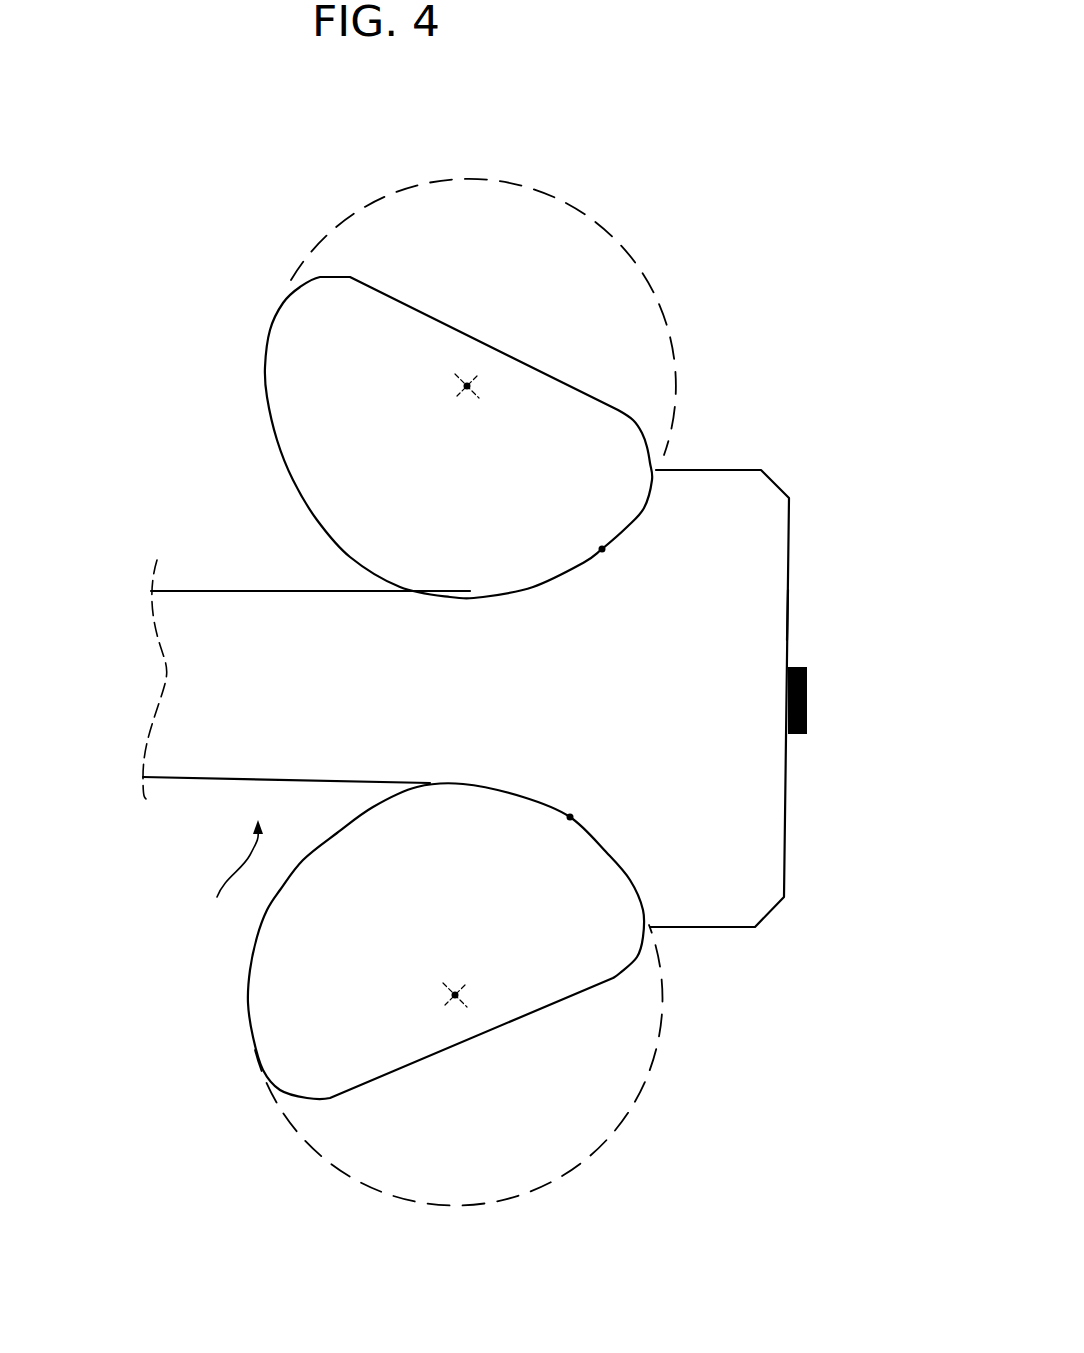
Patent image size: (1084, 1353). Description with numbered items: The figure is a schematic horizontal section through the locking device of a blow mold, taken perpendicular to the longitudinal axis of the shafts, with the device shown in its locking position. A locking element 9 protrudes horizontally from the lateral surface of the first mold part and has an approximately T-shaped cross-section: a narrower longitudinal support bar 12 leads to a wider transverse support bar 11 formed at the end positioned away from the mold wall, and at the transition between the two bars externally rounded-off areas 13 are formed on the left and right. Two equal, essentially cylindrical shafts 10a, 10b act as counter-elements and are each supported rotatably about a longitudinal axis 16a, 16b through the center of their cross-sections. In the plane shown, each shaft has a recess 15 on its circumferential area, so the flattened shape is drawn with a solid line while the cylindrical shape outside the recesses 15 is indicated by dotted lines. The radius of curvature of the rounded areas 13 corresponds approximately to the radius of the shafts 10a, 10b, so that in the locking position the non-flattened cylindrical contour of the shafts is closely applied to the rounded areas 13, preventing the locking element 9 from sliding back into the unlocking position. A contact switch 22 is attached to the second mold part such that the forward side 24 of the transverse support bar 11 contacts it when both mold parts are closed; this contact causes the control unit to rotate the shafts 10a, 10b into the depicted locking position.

The locking element 9 is at (230, 883).
The shaft 10a is at (573, 943).
The shaft 10b is at (388, 427).
The transverse support bar 11 is at (717, 519).
The longitudinal support bar 12 is at (242, 646).
The rounded areas 13 is at (602, 549).
The recesses 15 is at (568, 290).
The rotational axis 16a is at (455, 995).
The rotational axis 16b is at (467, 386).
The contact switch 22 is at (806, 697).
The forward side 24 is at (789, 616).